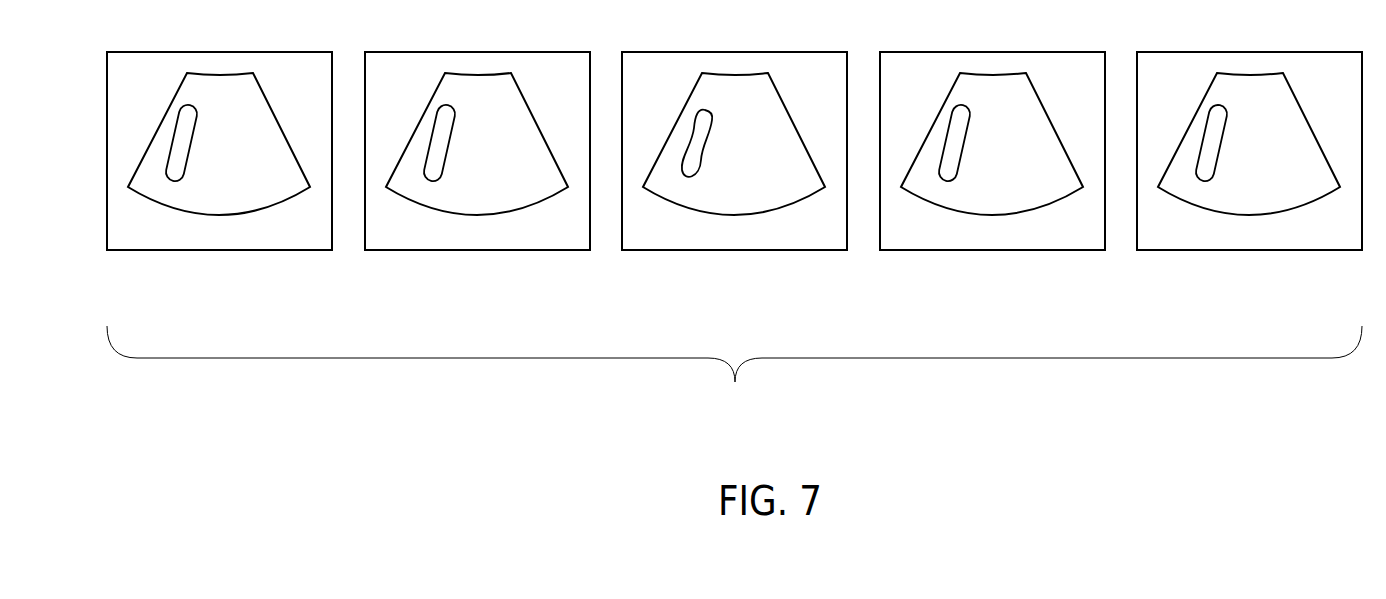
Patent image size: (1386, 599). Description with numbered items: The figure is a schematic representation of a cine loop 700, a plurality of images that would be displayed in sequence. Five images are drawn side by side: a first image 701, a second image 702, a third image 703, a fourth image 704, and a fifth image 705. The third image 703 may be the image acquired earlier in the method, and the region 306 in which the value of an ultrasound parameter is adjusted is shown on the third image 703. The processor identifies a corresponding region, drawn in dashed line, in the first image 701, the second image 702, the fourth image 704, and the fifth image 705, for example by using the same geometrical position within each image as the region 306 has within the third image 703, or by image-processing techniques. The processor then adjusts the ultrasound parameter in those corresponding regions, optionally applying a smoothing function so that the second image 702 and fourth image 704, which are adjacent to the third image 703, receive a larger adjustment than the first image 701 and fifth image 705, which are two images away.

The cine loop 700 is at (735, 382).
The first image 701 is at (224, 250).
The second image 702 is at (482, 250).
The third image 703 is at (740, 250).
The fourth image 704 is at (998, 250).
The fifth image 705 is at (1255, 250).
The region 306 is at (712, 134).